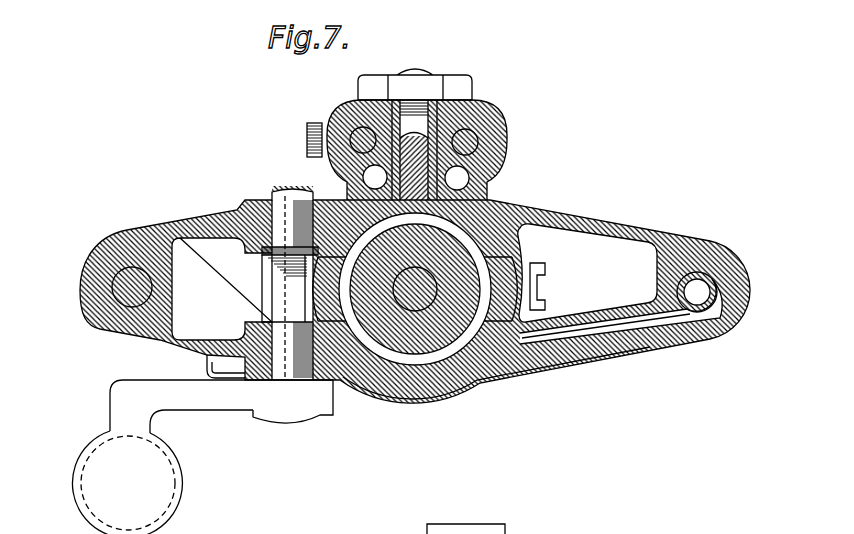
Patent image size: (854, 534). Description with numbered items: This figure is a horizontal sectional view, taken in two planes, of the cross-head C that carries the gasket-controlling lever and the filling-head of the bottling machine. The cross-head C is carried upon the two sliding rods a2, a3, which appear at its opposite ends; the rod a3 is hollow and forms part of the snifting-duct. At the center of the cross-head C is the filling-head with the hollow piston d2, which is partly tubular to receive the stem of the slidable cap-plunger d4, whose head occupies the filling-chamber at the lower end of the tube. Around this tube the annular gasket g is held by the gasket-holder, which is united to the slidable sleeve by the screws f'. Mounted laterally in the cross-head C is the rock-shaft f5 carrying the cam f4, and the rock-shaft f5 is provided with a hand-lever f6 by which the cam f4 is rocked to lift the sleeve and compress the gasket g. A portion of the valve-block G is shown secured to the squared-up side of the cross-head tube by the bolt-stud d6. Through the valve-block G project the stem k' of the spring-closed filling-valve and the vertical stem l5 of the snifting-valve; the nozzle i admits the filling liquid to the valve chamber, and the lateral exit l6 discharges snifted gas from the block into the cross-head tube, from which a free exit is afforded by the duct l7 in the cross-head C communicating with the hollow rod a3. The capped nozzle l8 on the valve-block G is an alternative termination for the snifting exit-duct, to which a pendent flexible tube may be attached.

The cross-head C is at (415, 294).
The valve-block G is at (420, 146).
The bolt-stud d6 is at (413, 69).
The vertical stem l5 is at (360, 132).
The capped nozzle l8 is at (307, 135).
The stem k' is at (499, 144).
The nozzle i is at (460, 180).
The lateral exit l6 is at (364, 178).
The rock-shaft f5 is at (283, 199).
The cam f4 is at (274, 298).
The hand-lever f6 is at (202, 457).
The sliding rod a2 is at (113, 277).
The sliding rod a3 is at (708, 278).
The annular gasket g is at (520, 256).
The screws f' is at (552, 286).
The duct l7 is at (578, 342).
The hollow piston d2 is at (402, 337).
The cap-plunger d4 is at (423, 310).